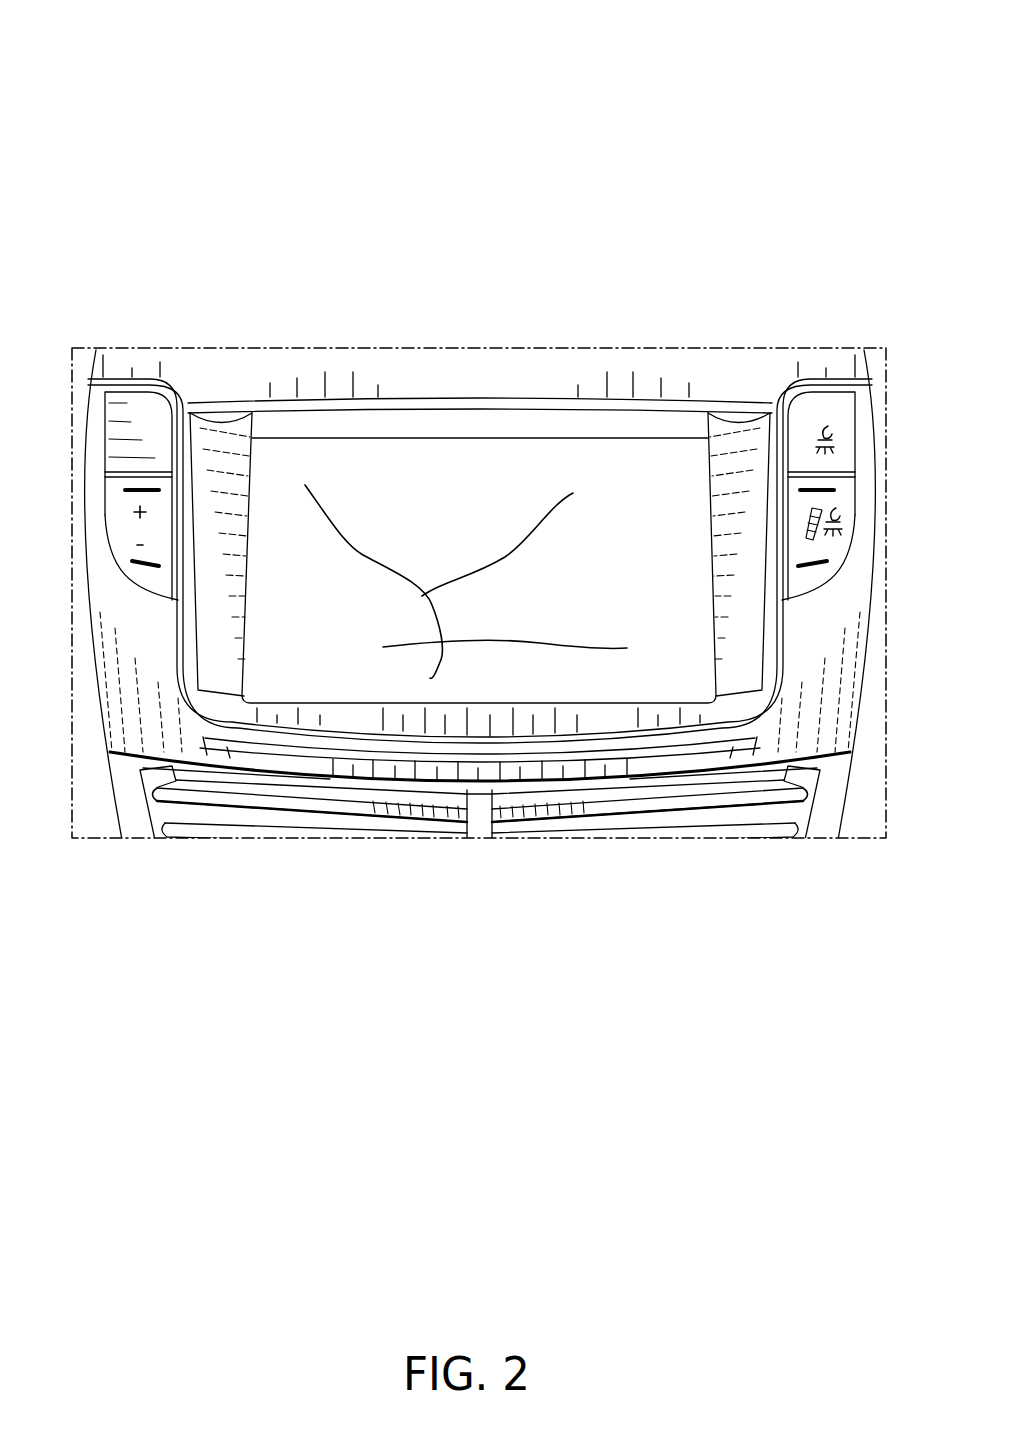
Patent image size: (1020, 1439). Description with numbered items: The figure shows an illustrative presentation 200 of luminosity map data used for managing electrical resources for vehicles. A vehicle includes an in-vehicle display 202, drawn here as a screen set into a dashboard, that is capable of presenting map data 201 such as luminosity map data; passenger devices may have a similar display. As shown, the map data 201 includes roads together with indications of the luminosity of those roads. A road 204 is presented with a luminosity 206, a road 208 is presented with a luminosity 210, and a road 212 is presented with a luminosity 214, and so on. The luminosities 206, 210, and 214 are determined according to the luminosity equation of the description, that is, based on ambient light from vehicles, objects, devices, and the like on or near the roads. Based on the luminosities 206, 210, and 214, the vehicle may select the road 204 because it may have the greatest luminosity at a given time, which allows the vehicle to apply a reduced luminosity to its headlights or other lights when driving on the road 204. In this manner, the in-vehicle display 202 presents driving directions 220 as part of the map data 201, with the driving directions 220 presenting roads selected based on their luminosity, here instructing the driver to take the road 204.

The presentation of luminosity map data 200 is at (858, 38).
The map data 201 is at (538, 457).
The in-vehicle display 202 is at (480, 397).
The road 204 is at (363, 555).
The luminosity 206 is at (335, 497).
The road 208 is at (513, 548).
The luminosity 210 is at (556, 510).
The road 212 is at (540, 643).
The luminosity 214 is at (494, 633).
The driving directions 220 is at (322, 615).